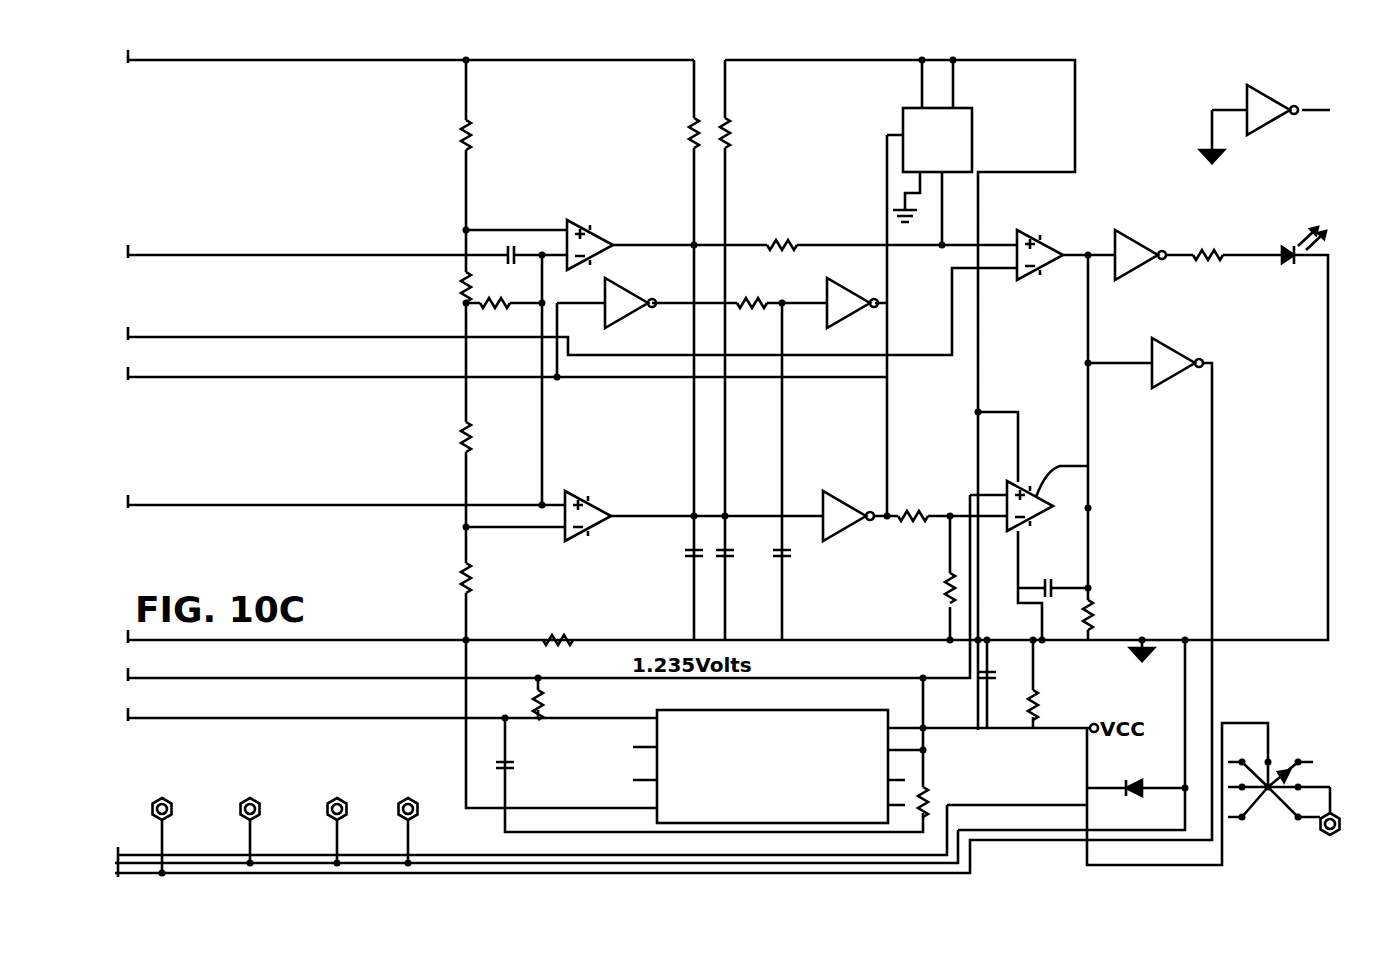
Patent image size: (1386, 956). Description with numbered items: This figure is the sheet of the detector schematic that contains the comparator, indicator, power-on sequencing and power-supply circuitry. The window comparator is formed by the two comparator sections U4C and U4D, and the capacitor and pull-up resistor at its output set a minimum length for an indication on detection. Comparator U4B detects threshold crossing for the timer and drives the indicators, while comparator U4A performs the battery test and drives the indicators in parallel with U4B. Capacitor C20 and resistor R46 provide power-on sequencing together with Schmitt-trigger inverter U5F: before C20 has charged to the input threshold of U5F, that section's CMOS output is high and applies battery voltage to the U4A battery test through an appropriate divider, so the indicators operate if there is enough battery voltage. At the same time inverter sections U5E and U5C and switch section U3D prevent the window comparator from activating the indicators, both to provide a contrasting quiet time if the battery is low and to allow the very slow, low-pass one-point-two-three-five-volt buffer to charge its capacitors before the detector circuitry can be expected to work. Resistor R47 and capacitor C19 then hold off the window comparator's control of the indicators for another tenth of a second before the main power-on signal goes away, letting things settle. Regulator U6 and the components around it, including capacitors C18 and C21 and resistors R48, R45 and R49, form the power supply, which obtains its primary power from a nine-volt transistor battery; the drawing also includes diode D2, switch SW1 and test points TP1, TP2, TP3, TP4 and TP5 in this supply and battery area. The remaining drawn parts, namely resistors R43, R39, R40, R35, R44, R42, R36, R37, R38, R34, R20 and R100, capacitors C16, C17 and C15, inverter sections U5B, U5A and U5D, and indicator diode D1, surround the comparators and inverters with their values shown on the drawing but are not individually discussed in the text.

The resistor 300K R43 is at (501, 141).
The resistor 1M R39 is at (668, 121).
The resistor R46 is at (762, 123).
The resistor 10K R40 is at (442, 297).
The resistor 100K R35 is at (466, 314).
The resistor 10K R44 is at (440, 438).
The resistor 120K R42 is at (439, 584).
The resistor 100K R36 is at (791, 249).
The resistor R47 is at (756, 307).
The resistor 51.1K R37 is at (926, 494).
The resistor 10K 1% R38 is at (910, 596).
The resistor 10K R34 is at (1137, 615).
The resistor 390 R20 is at (1217, 255).
The zero-ohm resistor R100 is at (569, 629).
The resistor 22.1K 1% R48 is at (572, 704).
The resistor 10K 1% R45 is at (994, 794).
The resistor 100K R49 is at (1063, 702).
The capacitor 0.47uF C16 is at (512, 260).
The capacitor 0.1uF ceramic C17 is at (665, 592).
The capacitor C20 is at (744, 578).
The capacitor C19 is at (812, 590).
The capacitor 0.1uF ceramic C15 is at (1077, 565).
The capacitor 1uF C21 is at (1007, 675).
The capacitor 1uF C18 is at (531, 775).
The comparator section U4D is at (602, 223).
The comparator section U4C is at (610, 503).
The comparator section U4B is at (1055, 231).
The comparator section U4A is at (1083, 517).
The inverter section U5E is at (638, 311).
The inverter section U5C is at (853, 309).
The Schmitt-trigger inverter section U5F is at (844, 518).
The inverter 74C14 U5B is at (1150, 259).
The inverter 74C14 U5A is at (1173, 364).
The inverter 74C14 U5D is at (1271, 111).
The analog switch section U3D is at (975, 144).
The power supply regulator U6 is at (773, 753).
The LED D1 is at (1299, 255).
The diode 1N4002 D2 is at (1137, 794).
The switch 1RSW6 SW1 is at (1270, 813).
The test point BEEP+ TP1 is at (173, 782).
The test point BEEP- TP2 is at (260, 782).
The test point SHIELD TP3 is at (355, 782).
The test point BATT- TP4 is at (425, 782).
The test point BATT+ TP5 is at (1338, 847).